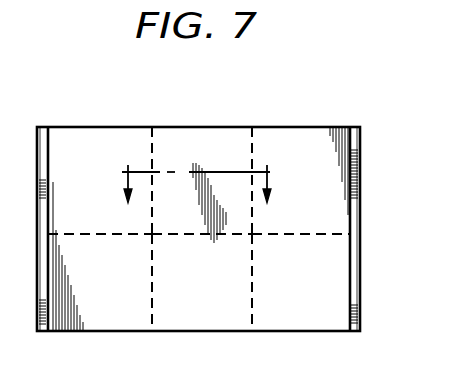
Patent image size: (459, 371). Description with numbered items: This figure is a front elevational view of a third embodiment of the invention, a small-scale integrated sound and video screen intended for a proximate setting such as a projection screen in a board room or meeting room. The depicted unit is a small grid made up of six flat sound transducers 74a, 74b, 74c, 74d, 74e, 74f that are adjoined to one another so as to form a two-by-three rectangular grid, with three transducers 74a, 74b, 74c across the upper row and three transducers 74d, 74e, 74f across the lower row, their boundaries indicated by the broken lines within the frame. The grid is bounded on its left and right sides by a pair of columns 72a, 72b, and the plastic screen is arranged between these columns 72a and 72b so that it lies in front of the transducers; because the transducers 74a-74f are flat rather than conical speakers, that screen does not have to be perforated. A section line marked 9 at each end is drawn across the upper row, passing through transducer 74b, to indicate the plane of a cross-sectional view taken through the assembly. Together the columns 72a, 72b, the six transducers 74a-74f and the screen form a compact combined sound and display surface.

The column 72a is at (45, 126).
The column 72b is at (358, 127).
The sound transducer 74a is at (118, 156).
The sound transducer 74b is at (216, 156).
The sound transducer 74c is at (323, 156).
The sound transducer 74d is at (114, 284).
The sound transducer 74e is at (222, 284).
The sound transducer 74f is at (316, 284).
The section line 9- 9 is at (196, 196).